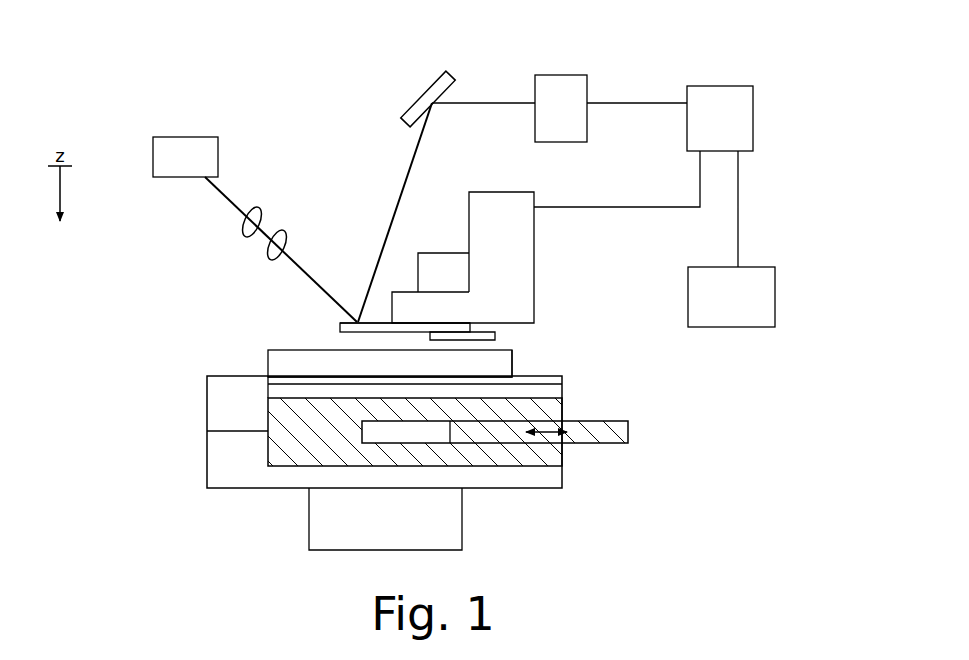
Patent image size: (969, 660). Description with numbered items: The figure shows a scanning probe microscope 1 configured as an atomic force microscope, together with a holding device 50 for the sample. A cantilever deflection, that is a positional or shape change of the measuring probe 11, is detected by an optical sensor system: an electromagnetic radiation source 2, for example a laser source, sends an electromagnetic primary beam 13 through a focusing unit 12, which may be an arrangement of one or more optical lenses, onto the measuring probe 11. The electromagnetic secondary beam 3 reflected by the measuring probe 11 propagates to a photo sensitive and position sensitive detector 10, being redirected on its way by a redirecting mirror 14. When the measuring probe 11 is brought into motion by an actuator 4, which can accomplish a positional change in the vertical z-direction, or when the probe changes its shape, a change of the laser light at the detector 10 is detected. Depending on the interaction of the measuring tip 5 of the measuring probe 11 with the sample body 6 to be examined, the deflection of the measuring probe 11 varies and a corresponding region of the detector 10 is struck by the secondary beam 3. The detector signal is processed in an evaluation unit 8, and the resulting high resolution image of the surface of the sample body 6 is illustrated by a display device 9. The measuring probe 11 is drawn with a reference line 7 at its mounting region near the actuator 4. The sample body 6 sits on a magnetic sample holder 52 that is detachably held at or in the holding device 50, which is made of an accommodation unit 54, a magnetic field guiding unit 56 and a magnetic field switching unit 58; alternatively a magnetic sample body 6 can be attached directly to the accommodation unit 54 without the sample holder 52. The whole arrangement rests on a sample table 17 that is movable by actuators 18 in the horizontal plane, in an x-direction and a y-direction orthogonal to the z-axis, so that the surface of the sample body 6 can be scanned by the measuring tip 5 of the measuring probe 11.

The scanning probe microscope 1 is at (97, 97).
The electromagnetic radiation source 2 is at (183, 137).
The electromagnetic secondary beam 3 is at (410, 163).
The actuator 4 is at (494, 192).
The measuring tip 5 is at (340, 332).
The sample body 6 is at (270, 366).
The workpiece surface 7 is at (372, 328).
The evaluation unit 8 is at (725, 86).
The display device 9 is at (758, 267).
The position sensitive detector 10 is at (560, 75).
The measuring probe 11 is at (357, 309).
The focusing unit 12 is at (270, 262).
The electromagnetic primary beam 13 is at (225, 196).
The redirecting mirror 14 is at (423, 92).
The sample table 17 is at (523, 476).
The actuators 18 is at (342, 521).
The holding device 50 is at (205, 388).
The sample holder 52 is at (503, 378).
The accommodation unit 54 is at (268, 381).
The magnetic field guiding unit 56 is at (275, 448).
The magnetic field switching unit 58 is at (603, 430).